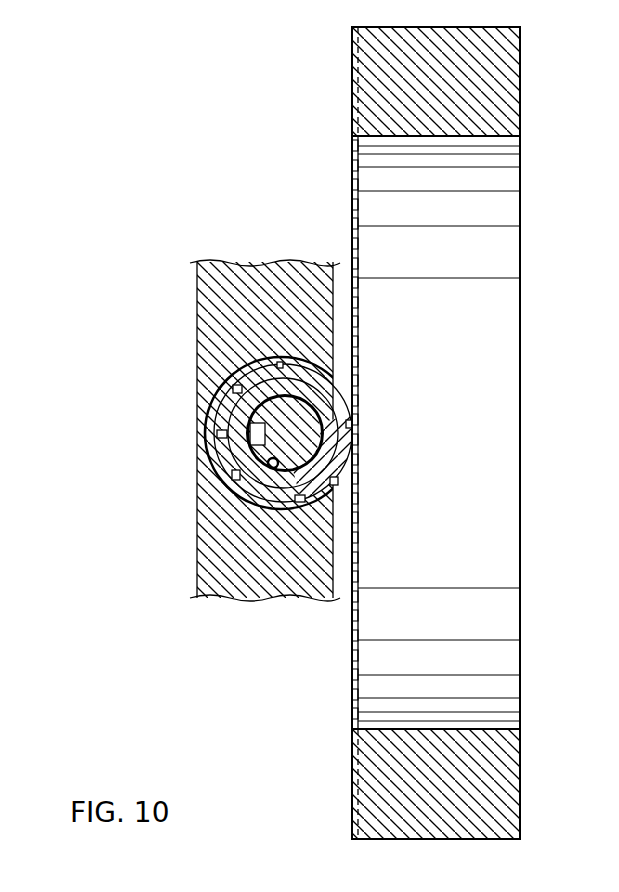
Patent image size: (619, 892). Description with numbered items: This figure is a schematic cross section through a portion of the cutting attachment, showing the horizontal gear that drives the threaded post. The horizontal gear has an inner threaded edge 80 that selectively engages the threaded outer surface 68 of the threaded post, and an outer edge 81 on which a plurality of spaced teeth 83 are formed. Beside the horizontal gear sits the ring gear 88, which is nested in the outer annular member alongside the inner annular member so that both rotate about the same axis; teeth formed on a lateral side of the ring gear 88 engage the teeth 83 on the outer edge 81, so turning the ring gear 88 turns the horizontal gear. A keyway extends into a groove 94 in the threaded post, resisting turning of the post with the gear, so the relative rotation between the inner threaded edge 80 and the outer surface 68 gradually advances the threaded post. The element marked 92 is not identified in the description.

The inner threaded edge 80 is at (262, 398).
The outer edge 81 is at (223, 456).
The spaced teeth 83 is at (220, 434).
The groove 94 is at (250, 397).
The outer surface 68 is at (273, 468).
The ring gear 88 is at (503, 93).
The serrated edge 92 is at (355, 663).